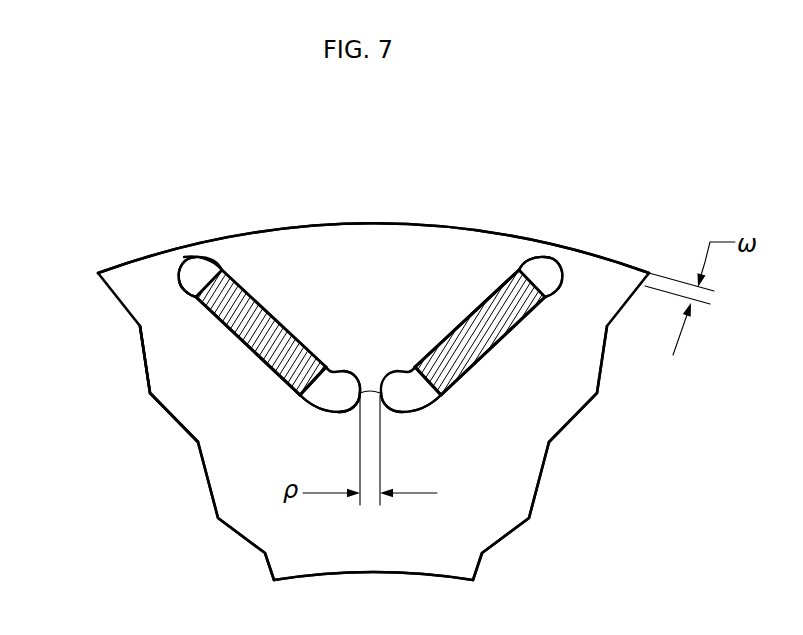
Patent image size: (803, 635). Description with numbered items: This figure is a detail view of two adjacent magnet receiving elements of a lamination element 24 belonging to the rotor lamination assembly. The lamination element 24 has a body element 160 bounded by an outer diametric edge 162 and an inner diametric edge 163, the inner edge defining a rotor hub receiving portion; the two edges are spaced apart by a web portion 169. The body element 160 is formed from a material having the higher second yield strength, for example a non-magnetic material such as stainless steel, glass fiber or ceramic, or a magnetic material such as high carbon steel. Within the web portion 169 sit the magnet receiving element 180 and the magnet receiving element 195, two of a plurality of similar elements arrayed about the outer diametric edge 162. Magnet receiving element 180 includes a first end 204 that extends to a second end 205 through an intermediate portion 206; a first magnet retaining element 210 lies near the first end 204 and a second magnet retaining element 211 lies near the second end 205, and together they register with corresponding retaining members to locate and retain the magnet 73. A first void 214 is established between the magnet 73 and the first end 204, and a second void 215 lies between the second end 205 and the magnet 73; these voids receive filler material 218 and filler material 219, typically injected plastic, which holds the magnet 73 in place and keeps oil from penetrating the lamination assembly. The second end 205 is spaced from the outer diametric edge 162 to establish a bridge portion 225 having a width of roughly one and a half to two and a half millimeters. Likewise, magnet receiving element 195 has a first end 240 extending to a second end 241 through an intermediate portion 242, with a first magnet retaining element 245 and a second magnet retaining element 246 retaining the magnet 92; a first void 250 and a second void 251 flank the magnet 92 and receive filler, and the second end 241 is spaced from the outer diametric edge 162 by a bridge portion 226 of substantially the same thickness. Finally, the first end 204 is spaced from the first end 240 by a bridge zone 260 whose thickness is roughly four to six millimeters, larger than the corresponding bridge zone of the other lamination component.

The lamination element 24 is at (120, 160).
The outer diametric edge 162 is at (380, 222).
The inner diametric edge 163 is at (418, 574).
The body element 160 is at (198, 497).
The web portion 169 is at (468, 522).
The magnet receiving element 180 is at (524, 372).
The magnet receiving element 195 is at (178, 334).
The magnet 92 is at (236, 300).
The magnet 73 is at (495, 308).
The bridge portion 226 is at (188, 248).
The second end 241 is at (182, 258).
The second void 251 is at (200, 255).
The second magnet retaining element 246 is at (195, 296).
The intermediate portion 242 is at (233, 335).
The first magnet retaining element 245 is at (336, 370).
The first void 250 is at (313, 397).
The first end 204 is at (352, 408).
The first end 240 is at (355, 412).
The second end 205 is at (550, 253).
The bridge portion 225 is at (558, 255).
The filler material 219 is at (533, 267).
The second void 215 is at (570, 284).
The second magnet retaining element 211 is at (551, 298).
The intermediate portion 206 is at (460, 311).
The first magnet retaining element 210 is at (410, 372).
The first void 214 is at (430, 404).
The filler material 218 is at (407, 405).
The bridge zone 260 is at (372, 400).